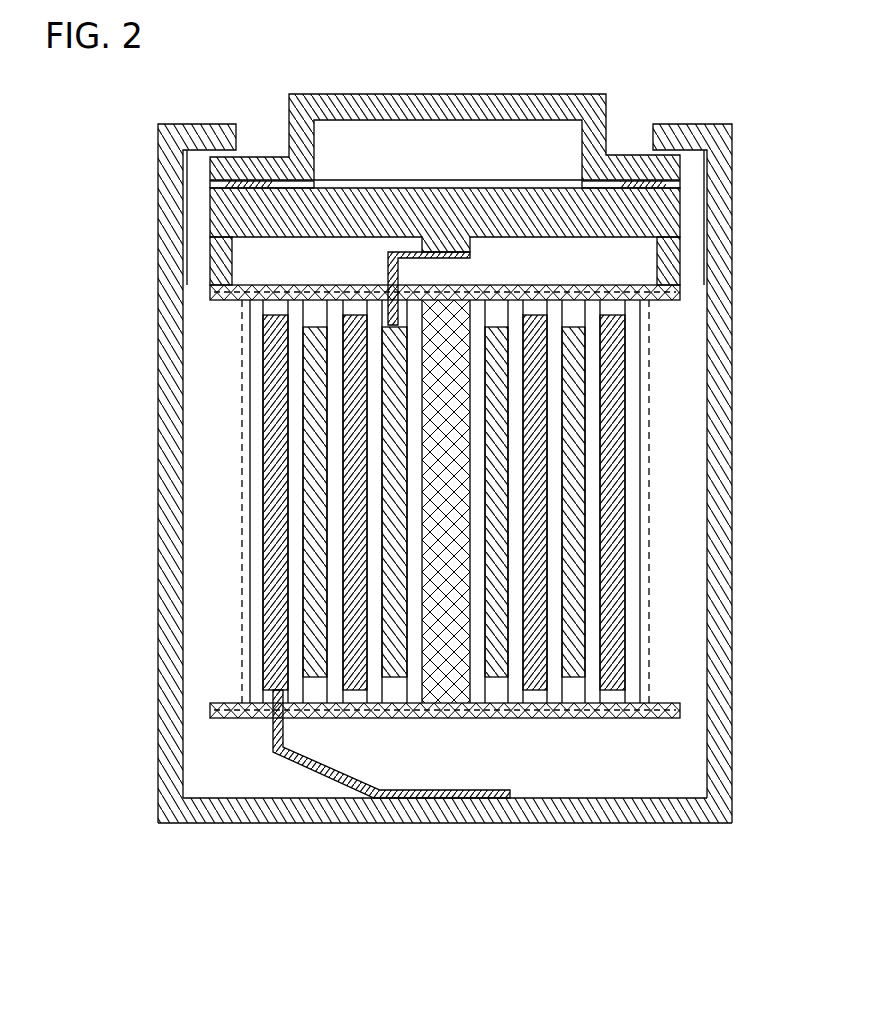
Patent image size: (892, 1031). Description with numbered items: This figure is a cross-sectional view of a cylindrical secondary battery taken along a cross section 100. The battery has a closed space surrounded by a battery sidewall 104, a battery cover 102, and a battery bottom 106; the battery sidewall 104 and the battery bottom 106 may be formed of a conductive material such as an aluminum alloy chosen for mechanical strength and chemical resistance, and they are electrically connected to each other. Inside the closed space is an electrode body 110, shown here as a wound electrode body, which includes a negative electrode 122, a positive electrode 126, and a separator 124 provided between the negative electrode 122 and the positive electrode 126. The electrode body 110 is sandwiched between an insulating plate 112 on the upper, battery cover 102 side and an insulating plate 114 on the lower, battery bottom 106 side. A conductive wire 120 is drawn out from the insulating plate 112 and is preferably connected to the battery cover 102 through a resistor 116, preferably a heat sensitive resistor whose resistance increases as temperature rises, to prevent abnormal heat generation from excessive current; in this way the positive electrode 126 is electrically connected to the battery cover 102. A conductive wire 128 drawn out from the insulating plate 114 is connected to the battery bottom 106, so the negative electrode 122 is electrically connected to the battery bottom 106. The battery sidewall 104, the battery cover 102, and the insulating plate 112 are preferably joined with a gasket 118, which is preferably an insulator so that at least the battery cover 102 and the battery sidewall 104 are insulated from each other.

The cross section 100 is at (713, 913).
The battery cover 102 is at (430, 94).
The battery sidewall 104 is at (168, 125).
The battery bottom 106 is at (487, 825).
The electrode body 110 is at (650, 537).
The insulating plate 112 is at (668, 302).
The insulating plate 114 is at (208, 708).
The resistor 116 is at (648, 180).
The gasket 118 is at (688, 198).
The conductive wire 120 is at (418, 252).
The negative electrode 122 is at (275, 465).
The separator 124 is at (300, 556).
The positive electrode 126 is at (297, 640).
The conductive wire 128 is at (398, 800).